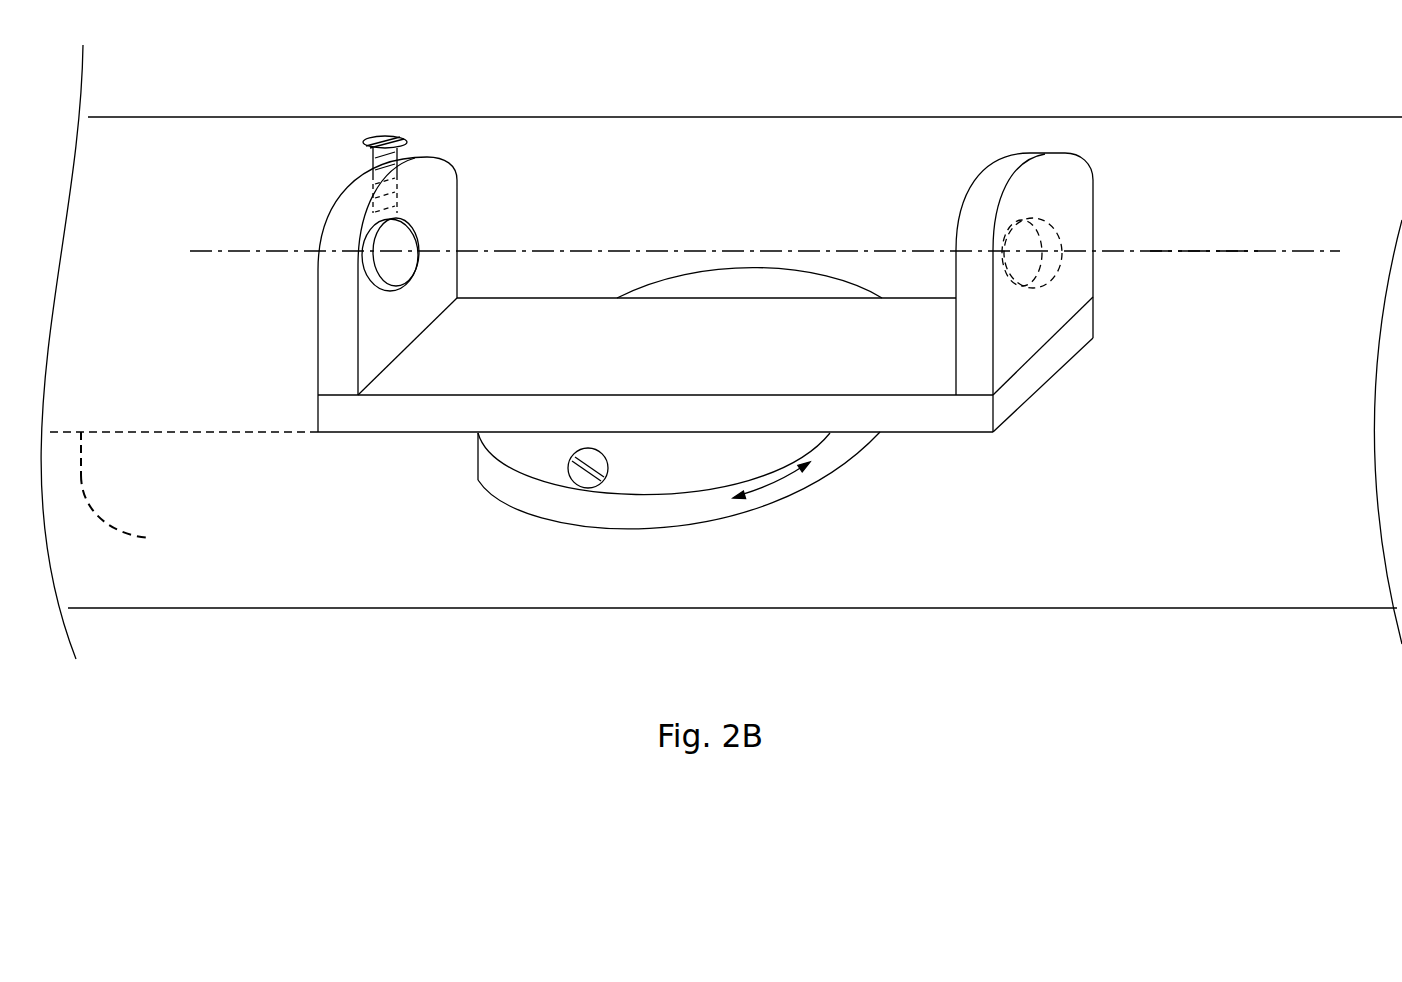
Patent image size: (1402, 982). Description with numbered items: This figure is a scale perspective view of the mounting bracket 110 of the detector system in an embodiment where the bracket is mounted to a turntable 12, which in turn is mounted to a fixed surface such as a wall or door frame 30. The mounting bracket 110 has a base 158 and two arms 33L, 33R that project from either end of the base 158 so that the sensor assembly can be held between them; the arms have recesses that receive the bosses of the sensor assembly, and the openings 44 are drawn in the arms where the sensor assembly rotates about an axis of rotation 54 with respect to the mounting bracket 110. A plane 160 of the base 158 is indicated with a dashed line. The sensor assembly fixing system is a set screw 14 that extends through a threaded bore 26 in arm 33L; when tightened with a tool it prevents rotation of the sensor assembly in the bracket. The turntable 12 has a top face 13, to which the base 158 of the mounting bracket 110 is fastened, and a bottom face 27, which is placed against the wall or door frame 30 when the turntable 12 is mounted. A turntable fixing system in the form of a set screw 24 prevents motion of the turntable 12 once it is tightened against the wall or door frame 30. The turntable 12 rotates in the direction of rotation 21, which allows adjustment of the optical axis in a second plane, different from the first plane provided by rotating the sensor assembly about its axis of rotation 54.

The turntable 12 is at (627, 428).
The top face 13 is at (760, 278).
The set screw 14 is at (392, 137).
The direction of rotation 21 is at (770, 492).
The set screw 24 is at (605, 478).
The threaded bore 26 is at (383, 158).
The bottom face 27 is at (578, 532).
The wall or door frame 30 is at (721, 352).
The arm 33L is at (322, 226).
The arm 33R is at (1075, 202).
The pivot hole 44 is at (365, 280).
The axis of rotation 54 is at (1195, 251).
The mounting bracket 110 is at (699, 340).
The base 158 is at (362, 412).
The plane 160 is at (184, 490).